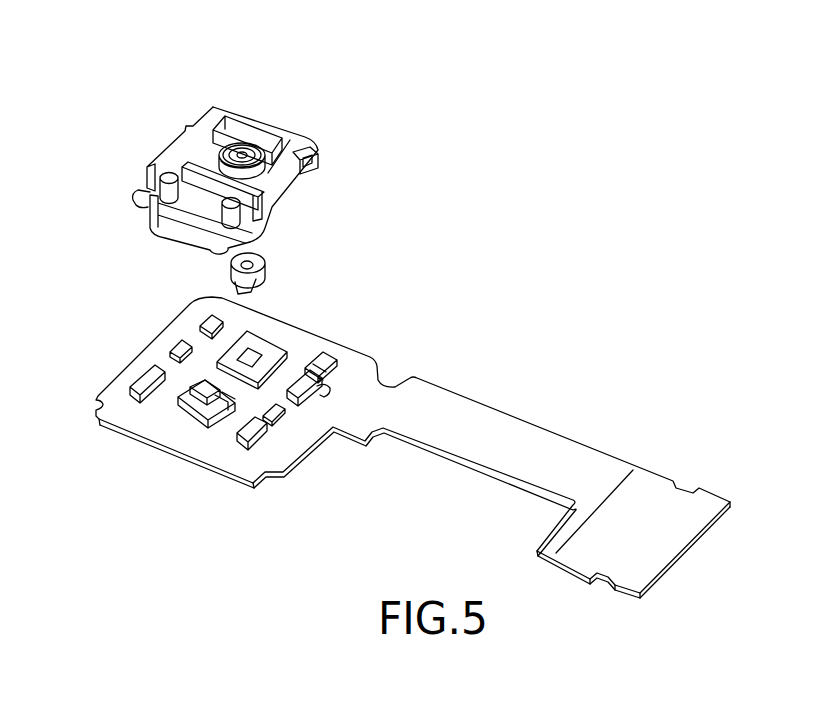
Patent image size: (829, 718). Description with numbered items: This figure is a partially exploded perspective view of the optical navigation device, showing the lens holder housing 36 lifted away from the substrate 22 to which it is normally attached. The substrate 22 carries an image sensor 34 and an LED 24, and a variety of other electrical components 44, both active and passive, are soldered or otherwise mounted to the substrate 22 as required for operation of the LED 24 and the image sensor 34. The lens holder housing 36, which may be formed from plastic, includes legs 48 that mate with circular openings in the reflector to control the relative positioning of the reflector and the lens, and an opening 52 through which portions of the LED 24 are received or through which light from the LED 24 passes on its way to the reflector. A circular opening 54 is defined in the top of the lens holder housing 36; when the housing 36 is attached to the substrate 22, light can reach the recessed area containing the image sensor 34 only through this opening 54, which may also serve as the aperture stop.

The substrate 22 is at (320, 344).
The LED 24 is at (205, 410).
The image sensor 34 is at (262, 340).
The lens holder housing 36 is at (205, 172).
The electrical components 44 is at (140, 398).
The legs 48 is at (160, 192).
The opening 52 is at (193, 228).
The circular opening 54 is at (242, 155).